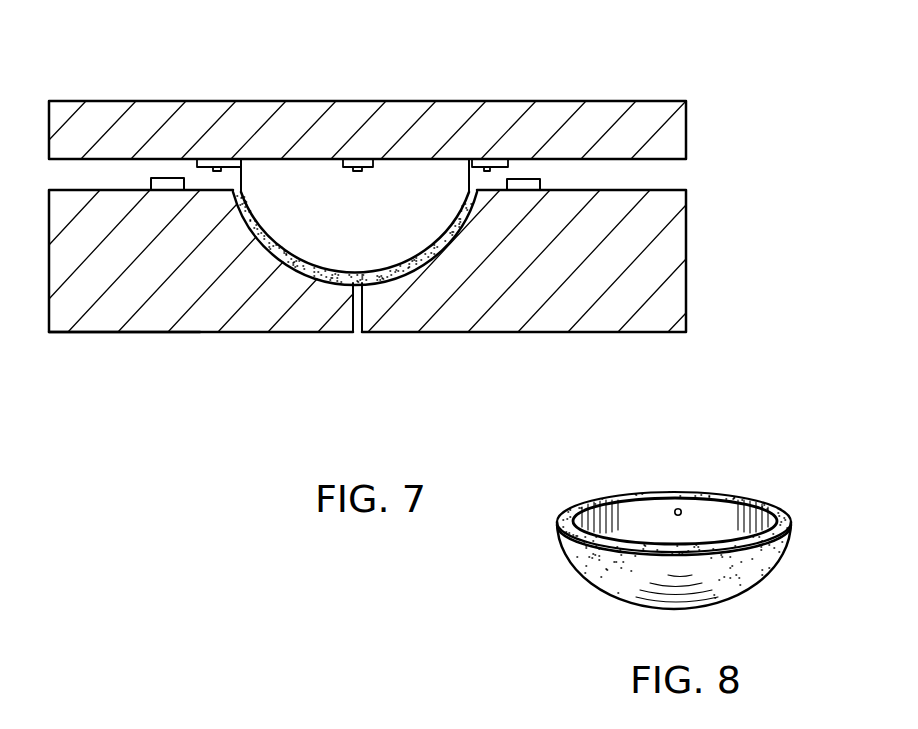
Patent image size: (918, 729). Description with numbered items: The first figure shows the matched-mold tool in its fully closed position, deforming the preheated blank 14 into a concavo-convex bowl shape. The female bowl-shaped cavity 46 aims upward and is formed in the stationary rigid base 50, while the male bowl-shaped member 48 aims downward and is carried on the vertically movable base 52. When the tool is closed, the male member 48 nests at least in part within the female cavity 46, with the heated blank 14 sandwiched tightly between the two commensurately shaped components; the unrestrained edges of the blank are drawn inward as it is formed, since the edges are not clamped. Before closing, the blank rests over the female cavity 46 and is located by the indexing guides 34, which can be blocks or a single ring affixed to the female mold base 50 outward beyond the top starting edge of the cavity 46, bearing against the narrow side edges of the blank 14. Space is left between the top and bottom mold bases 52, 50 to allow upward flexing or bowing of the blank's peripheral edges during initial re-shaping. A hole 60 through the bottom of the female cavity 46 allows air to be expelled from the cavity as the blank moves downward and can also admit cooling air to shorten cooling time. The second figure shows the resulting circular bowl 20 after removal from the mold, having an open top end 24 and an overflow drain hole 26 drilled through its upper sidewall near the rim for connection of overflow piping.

In FIG. 7, the blank 14 is at (295, 263).
In FIG. 8, the circular bowl 20 is at (585, 577).
In FIG. 8, the top open end of the bowl 24 is at (757, 500).
In FIG. 8, the overflow drain hole 26 is at (679, 508).
In FIG. 7, the indexing guides 34 is at (540, 181).
In FIG. 7, the female bowl-shaped cavity 46 is at (130, 333).
In FIG. 7, the male bowl-shaped member 48 is at (313, 213).
In FIG. 7, the rigid base 50 is at (686, 250).
In FIG. 7, the vertically movable base 52 is at (548, 100).
In FIG. 7, the hole 60 is at (357, 334).